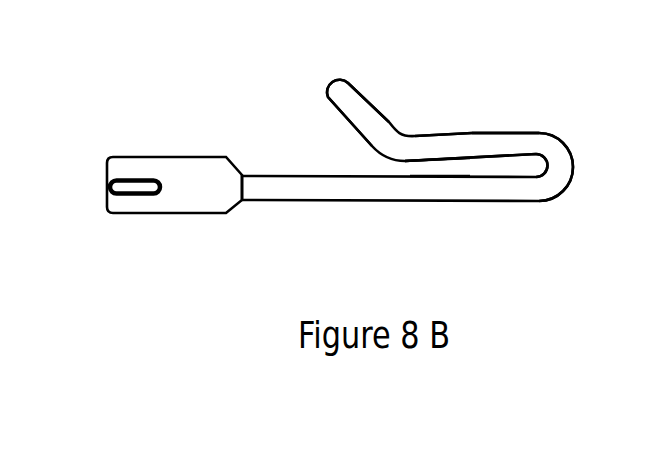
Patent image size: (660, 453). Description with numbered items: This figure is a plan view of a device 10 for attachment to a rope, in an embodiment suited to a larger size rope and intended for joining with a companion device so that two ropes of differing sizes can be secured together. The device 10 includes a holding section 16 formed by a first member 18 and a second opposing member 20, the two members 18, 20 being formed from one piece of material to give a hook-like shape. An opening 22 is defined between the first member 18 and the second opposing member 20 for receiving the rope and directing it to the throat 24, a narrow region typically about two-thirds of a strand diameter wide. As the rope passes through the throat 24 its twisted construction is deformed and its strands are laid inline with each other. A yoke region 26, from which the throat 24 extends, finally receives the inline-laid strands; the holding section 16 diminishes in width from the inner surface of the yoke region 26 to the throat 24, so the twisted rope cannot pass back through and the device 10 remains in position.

The device 10 is at (377, 164).
The holding section 16 is at (530, 113).
The first member 18 is at (390, 202).
The second opposing member 20 is at (472, 134).
The opening 22 is at (320, 144).
The throat 24 is at (406, 168).
The yoke region 26 is at (541, 163).